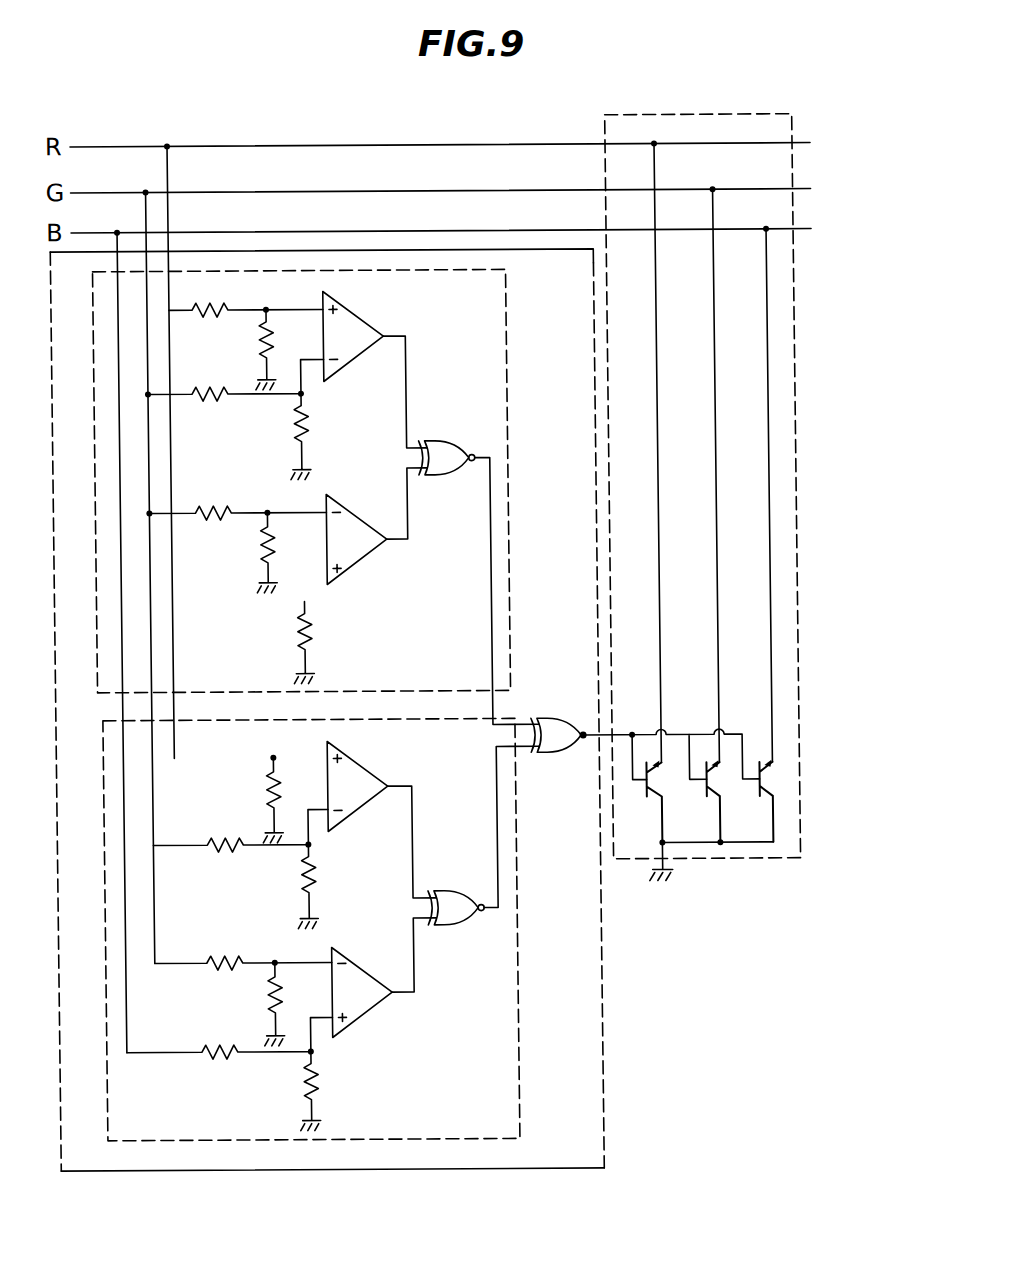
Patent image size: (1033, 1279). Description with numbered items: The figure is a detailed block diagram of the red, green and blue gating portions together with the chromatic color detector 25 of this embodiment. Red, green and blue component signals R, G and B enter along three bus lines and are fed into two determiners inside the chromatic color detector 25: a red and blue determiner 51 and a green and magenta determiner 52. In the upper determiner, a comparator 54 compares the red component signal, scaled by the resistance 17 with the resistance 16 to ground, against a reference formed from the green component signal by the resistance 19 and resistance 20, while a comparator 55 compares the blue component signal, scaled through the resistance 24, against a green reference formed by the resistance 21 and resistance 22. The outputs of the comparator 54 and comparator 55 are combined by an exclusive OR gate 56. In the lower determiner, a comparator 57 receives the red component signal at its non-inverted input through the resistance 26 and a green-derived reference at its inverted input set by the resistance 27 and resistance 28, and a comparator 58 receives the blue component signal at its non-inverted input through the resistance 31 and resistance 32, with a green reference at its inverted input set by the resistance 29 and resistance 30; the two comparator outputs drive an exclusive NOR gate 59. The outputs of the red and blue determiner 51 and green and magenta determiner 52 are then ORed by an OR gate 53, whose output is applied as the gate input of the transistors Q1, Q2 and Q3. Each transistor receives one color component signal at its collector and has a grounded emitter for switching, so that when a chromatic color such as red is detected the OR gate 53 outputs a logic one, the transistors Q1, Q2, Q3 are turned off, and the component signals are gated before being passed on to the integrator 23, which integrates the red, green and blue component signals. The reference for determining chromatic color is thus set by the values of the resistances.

The chromatic color detector 25 is at (576, 959).
The red and blue determiner 51 is at (492, 392).
The green and magenta determiner 52 is at (490, 995).
The OR gate 53 is at (556, 752).
The comparator 54 is at (360, 330).
The comparator 55 is at (362, 531).
The exclusive OR gate 56 is at (451, 477).
The comparator 57 is at (364, 779).
The comparator 58 is at (362, 983).
The exclusive NOR gate 59 is at (452, 928).
The integrator 23 is at (764, 486).
The transistor Q1 is at (661, 801).
The transistor Q2 is at (721, 801).
The transistor Q3 is at (774, 801).
The resistance 16 is at (243, 348).
The resistance 17 is at (246, 299).
The resistance 19 is at (234, 380).
The resistance 20 is at (322, 436).
The resistance 21 is at (236, 501).
The resistance 22 is at (246, 551).
The resistance 24 is at (330, 642).
The resistance 26 is at (248, 799).
The resistance 27 is at (241, 831).
The resistance 28 is at (329, 886).
The resistance 29 is at (242, 952).
The resistance 30 is at (250, 1004).
The resistance 31 is at (229, 1038).
The resistance 32 is at (332, 1090).